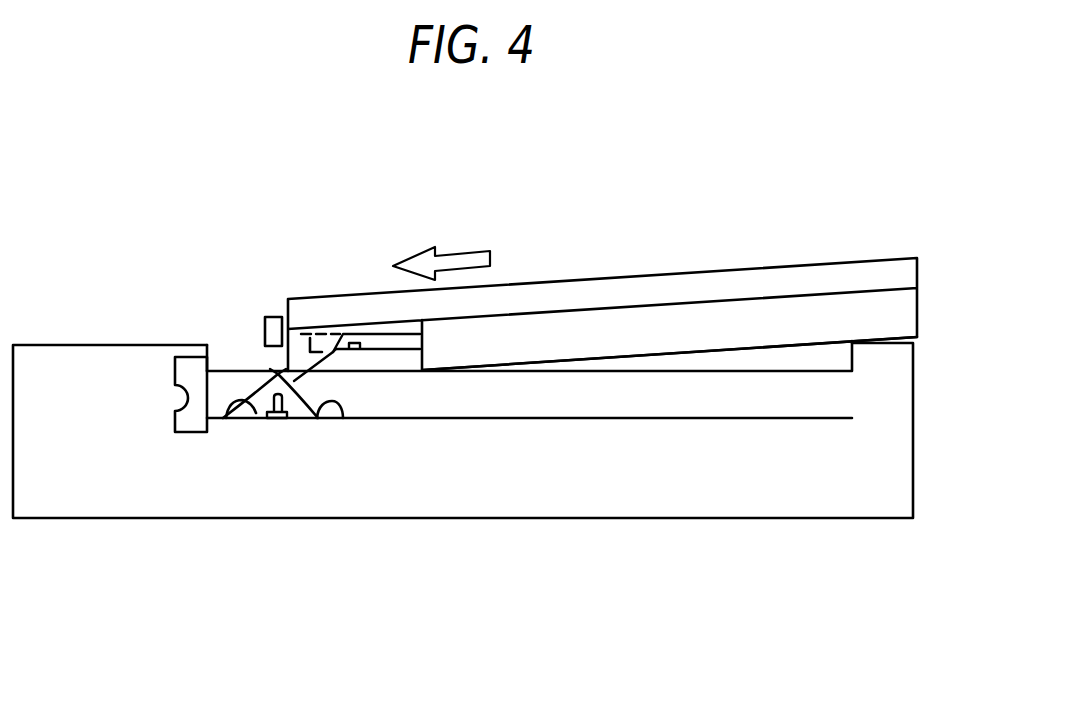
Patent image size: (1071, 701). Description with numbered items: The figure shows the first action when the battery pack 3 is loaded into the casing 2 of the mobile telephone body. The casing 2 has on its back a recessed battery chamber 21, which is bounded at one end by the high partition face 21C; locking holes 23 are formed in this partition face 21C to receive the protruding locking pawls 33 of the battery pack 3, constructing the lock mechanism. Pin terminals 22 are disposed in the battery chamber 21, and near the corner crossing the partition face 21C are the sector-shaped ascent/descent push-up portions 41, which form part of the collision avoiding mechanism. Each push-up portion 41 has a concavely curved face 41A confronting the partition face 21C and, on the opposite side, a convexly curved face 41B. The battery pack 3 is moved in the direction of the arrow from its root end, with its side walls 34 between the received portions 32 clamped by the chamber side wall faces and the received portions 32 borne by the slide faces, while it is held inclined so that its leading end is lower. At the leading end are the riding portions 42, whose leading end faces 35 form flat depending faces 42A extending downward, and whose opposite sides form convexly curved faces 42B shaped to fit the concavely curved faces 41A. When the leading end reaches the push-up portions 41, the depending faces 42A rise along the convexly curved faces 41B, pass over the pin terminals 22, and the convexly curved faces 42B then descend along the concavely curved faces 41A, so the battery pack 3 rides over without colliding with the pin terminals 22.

The casing 2 is at (629, 488).
The battery pack 3 is at (725, 280).
The battery chamber 21 is at (713, 397).
The partition face 21C is at (220, 347).
The pin terminals 22 is at (253, 418).
The locking holes 23 is at (174, 410).
The received portions 32 is at (786, 298).
The locking pawls 33 is at (265, 326).
The side walls 34 is at (566, 330).
The leading end faces 35 is at (277, 307).
The ascent/descent push-up portions 41 is at (333, 620).
The concavely curved face 41A is at (226, 420).
The convexly curved face 41B is at (343, 420).
The riding portions 42 is at (314, 383).
The depending faces 42A is at (277, 372).
The convexly curved faces 42B is at (333, 352).